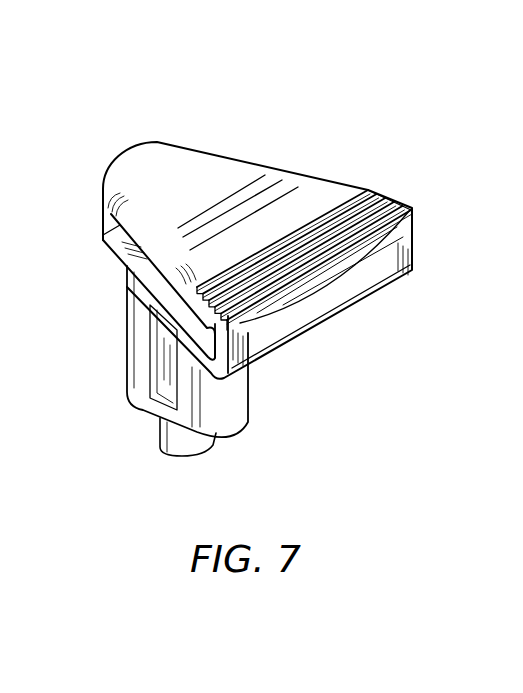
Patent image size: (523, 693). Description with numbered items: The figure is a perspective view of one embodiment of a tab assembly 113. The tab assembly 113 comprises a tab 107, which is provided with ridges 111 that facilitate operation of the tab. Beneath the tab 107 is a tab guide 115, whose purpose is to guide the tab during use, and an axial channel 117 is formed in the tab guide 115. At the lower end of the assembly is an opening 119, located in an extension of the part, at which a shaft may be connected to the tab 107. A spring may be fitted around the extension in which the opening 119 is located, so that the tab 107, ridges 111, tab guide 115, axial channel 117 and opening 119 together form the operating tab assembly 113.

The tab assembly 113 is at (267, 77).
The tab 107 is at (160, 186).
The ridges 111 is at (380, 188).
The tab guide 115 is at (230, 407).
The axial channel 117 is at (162, 343).
The opening 119 is at (183, 444).